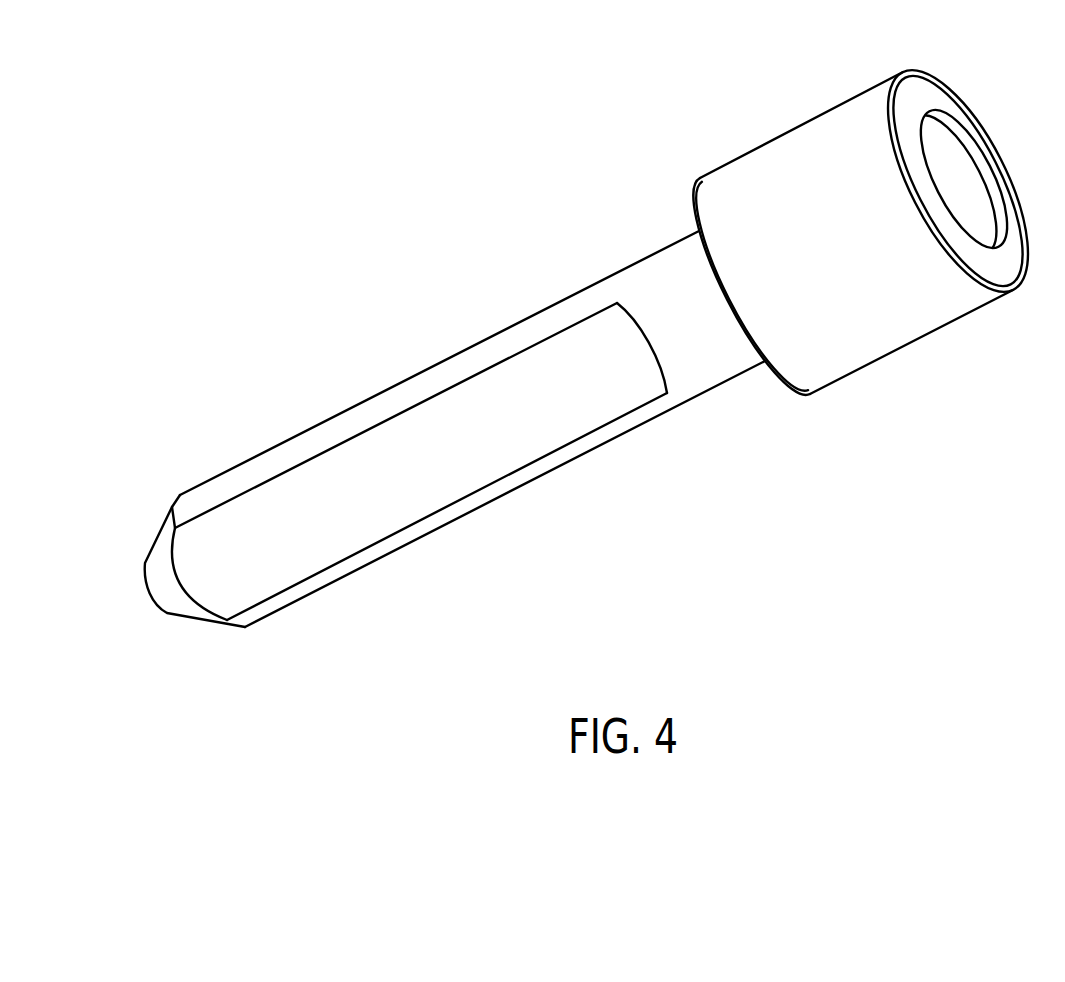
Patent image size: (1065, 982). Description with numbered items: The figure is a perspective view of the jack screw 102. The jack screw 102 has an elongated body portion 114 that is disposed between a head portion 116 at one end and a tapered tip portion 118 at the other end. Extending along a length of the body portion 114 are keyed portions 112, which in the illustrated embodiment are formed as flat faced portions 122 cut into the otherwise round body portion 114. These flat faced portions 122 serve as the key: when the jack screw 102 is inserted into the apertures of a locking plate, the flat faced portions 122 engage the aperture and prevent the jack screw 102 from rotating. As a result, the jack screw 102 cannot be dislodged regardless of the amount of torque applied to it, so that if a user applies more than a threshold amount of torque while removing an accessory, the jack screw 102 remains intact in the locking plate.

The jack screw 102 is at (932, 558).
The keyed portions 112 is at (685, 437).
The body portion 114 is at (652, 173).
The head portion 116 is at (665, 167).
The tip portion 118 is at (135, 437).
The flat faced portions 122 is at (673, 523).